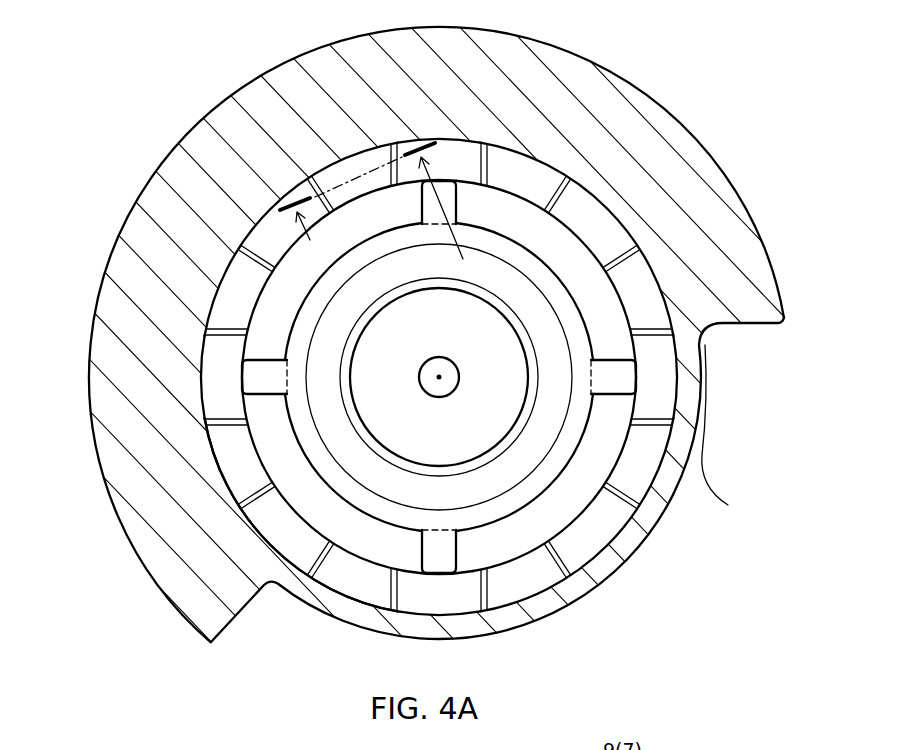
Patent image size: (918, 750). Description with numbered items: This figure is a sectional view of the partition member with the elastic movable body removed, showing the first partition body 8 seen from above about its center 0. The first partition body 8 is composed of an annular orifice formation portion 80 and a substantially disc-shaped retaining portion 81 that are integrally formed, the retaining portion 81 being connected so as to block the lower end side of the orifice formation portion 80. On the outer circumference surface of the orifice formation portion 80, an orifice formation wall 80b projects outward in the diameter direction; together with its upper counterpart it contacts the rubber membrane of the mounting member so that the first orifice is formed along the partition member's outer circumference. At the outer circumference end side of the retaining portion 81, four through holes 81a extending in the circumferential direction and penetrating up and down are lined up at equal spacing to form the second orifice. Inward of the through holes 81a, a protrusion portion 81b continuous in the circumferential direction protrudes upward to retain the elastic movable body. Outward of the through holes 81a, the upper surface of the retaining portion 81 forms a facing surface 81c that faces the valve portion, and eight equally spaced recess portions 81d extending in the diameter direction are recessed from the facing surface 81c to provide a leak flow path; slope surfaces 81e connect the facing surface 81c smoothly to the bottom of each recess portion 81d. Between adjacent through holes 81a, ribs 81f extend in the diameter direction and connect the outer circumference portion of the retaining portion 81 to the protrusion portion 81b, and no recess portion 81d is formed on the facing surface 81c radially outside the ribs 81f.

The first partition body 8 is at (760, 82).
The orifice formation portion 80 is at (459, 375).
The orifice formation wall 80b is at (715, 308).
The retaining portion 81 is at (437, 405).
The through hole 81a is at (382, 570).
The protrusion portion 81b is at (483, 485).
The facing surface 81c is at (593, 528).
The recess portion 81d is at (530, 173).
The slope surface 81e is at (270, 270).
The rib 81f is at (450, 198).
The center axis 0 is at (439, 377).